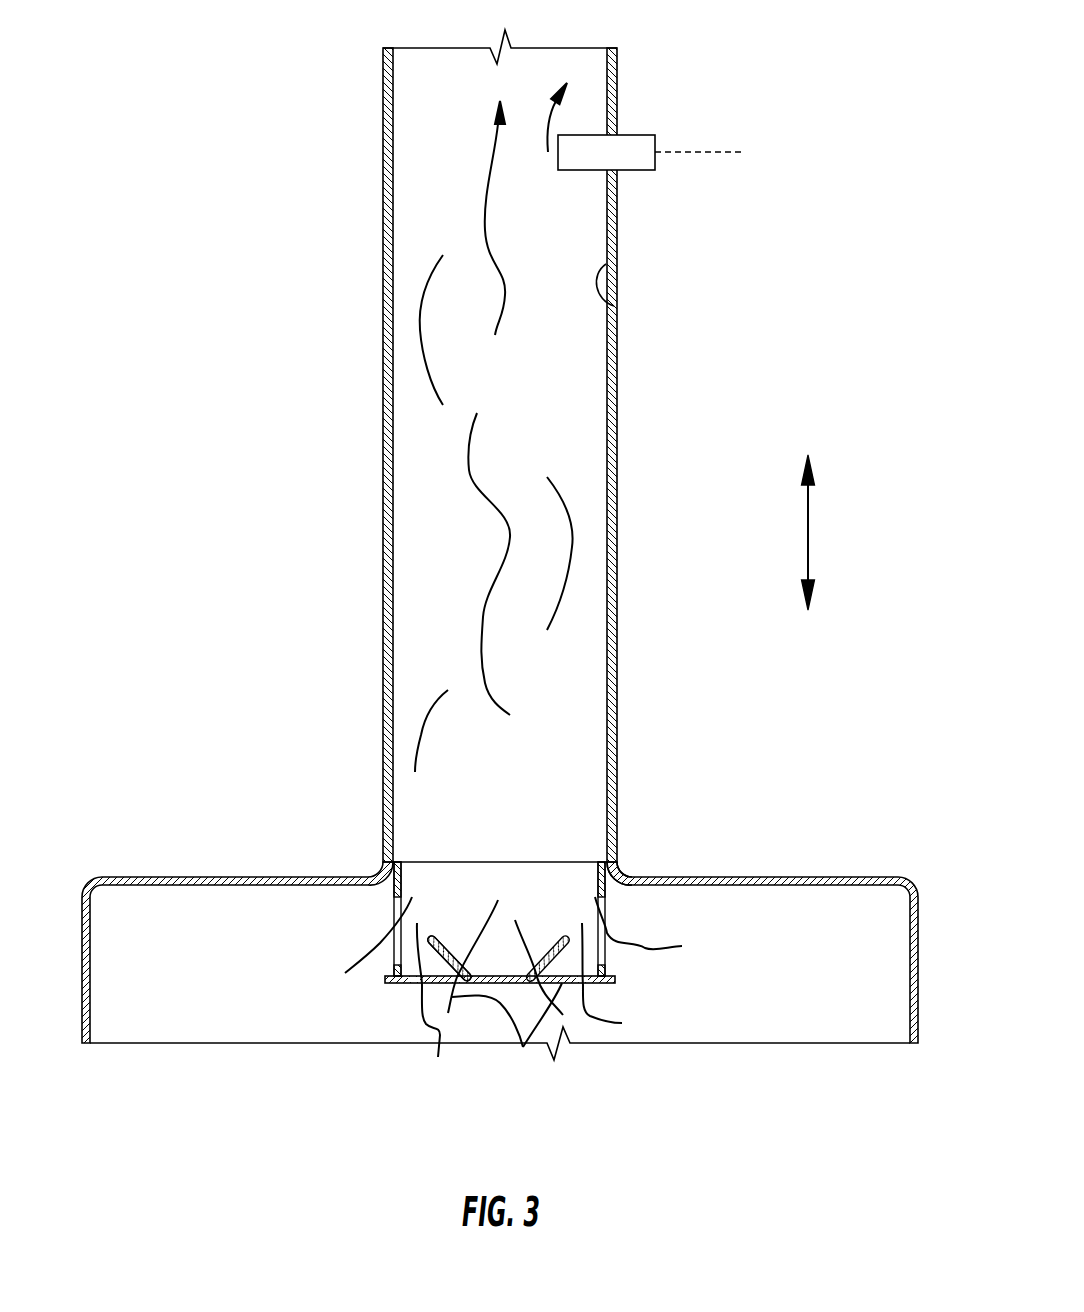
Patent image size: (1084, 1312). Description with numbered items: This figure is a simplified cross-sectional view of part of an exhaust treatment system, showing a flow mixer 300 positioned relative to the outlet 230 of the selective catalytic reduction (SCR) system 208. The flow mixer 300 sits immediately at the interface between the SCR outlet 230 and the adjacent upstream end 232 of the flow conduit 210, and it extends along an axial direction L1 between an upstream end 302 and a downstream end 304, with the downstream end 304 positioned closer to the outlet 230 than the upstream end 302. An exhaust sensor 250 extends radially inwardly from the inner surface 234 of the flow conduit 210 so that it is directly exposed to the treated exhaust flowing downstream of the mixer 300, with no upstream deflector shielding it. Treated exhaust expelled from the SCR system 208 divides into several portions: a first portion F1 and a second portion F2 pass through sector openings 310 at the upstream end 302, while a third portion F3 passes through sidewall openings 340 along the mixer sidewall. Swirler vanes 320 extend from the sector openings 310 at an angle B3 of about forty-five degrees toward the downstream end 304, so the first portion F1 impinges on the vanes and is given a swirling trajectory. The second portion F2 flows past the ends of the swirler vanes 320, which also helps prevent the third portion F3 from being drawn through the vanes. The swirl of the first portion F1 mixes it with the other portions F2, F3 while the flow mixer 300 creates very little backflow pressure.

The selective catalytic reduction (SCR) system 208 is at (859, 848).
The flow conduit 210 is at (657, 564).
The outlet of the SCR system 230 is at (615, 867).
The upstream end of the flow conduit 232 is at (619, 873).
The inner surface of the flow conduit 234 is at (614, 306).
The exhaust sensor 250 is at (657, 103).
The flow mixer 300 is at (495, 972).
The upstream end of the flow mixer 302 is at (388, 983).
The downstream end of the flow mixer 304 is at (542, 860).
The sector openings 310 is at (410, 983).
The swirler vanes 320 is at (447, 937).
The sidewall openings 340 is at (392, 903).
The angle between sector openings and swirler vanes B3 is at (458, 950).
The first portion of the treated exhaust flow F1 is at (523, 1047).
The second portion of the treated exhaust flow F2 is at (532, 1007).
The third portion of the treated exhaust flow F3 is at (375, 953).
The axial direction L1 is at (808, 537).